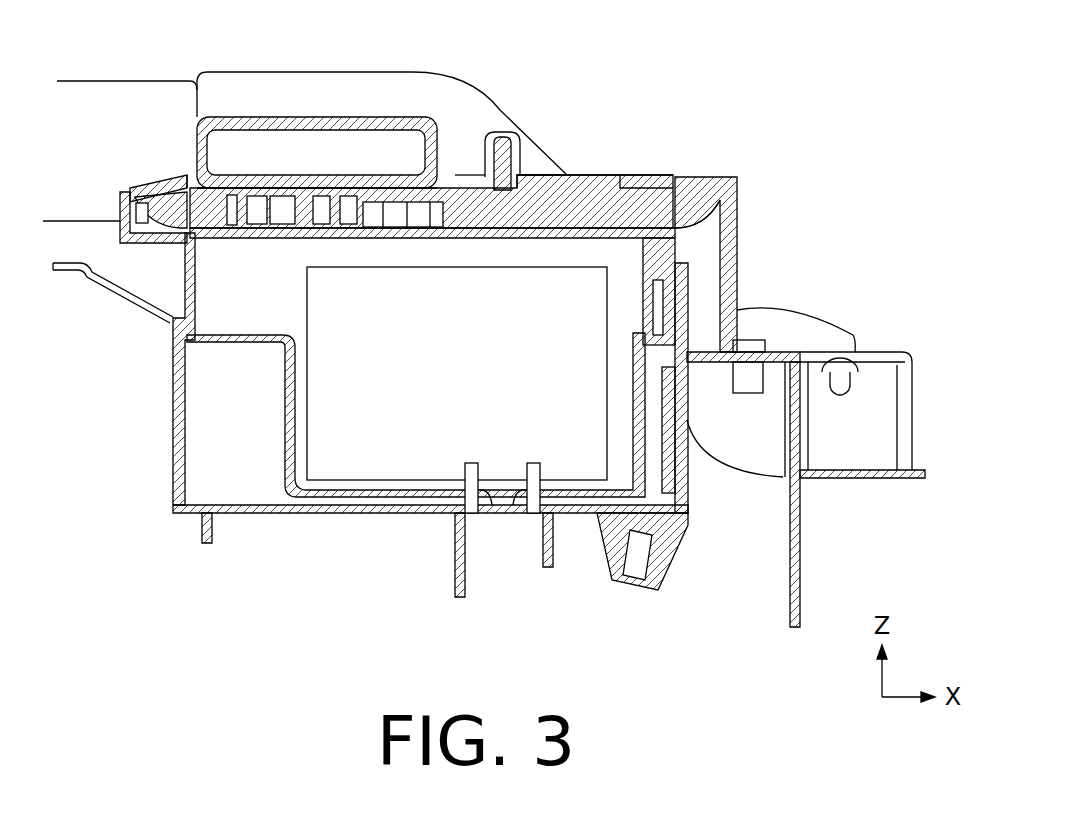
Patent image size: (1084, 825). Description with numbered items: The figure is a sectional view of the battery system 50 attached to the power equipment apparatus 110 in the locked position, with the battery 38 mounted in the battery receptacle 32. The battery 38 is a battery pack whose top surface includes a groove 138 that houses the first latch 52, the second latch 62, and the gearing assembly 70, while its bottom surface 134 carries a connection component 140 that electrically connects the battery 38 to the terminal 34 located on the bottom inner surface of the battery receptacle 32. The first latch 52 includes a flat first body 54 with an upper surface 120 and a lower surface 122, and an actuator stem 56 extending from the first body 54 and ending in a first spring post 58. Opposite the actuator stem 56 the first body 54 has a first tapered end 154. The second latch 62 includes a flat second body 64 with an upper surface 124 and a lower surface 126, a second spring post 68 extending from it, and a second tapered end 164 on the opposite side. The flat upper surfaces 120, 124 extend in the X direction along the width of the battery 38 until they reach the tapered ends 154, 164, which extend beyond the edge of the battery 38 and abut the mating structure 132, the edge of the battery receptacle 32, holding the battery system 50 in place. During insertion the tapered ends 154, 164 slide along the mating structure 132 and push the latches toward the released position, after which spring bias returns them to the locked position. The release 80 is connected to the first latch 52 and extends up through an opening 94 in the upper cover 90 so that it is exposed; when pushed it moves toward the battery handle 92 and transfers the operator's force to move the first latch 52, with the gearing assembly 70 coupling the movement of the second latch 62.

The battery receptacle 32 is at (163, 483).
The terminal 34 is at (514, 500).
The battery 38 is at (230, 304).
The battery system 50 is at (697, 68).
The first latch 52 is at (457, 168).
The first body 54 is at (583, 205).
The actuator stem 56 is at (383, 188).
The first spring post 58 is at (344, 232).
The second latch 62 is at (182, 172).
The second body 64 is at (217, 232).
The second spring post 68 is at (237, 205).
The gearing assembly 70 is at (330, 163).
The release 80 is at (503, 134).
The upper cover 90 is at (658, 176).
The battery handle 92 is at (240, 72).
The opening 94 is at (530, 177).
The power equipment apparatus 110 is at (905, 500).
The upper surface 120 is at (627, 178).
The lower surface 122 is at (682, 255).
The upper surface 124 is at (230, 187).
The lower surface 126 is at (184, 244).
The mating structure 132 is at (690, 178).
The bottom surface 134 is at (362, 507).
The groove 138 is at (487, 232).
The connection component 140 is at (472, 463).
The first tapered end 154 is at (722, 203).
The second tapered end 164 is at (138, 216).